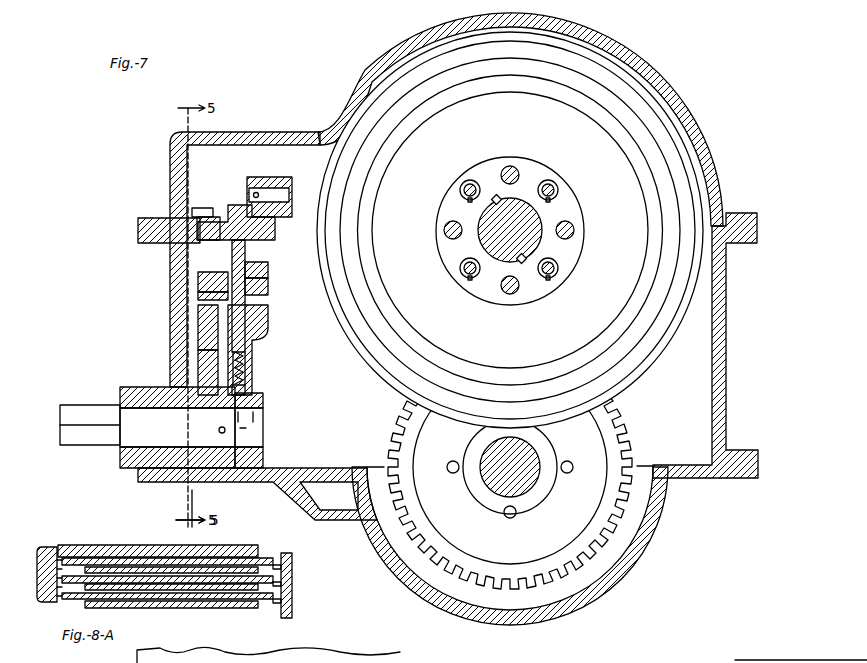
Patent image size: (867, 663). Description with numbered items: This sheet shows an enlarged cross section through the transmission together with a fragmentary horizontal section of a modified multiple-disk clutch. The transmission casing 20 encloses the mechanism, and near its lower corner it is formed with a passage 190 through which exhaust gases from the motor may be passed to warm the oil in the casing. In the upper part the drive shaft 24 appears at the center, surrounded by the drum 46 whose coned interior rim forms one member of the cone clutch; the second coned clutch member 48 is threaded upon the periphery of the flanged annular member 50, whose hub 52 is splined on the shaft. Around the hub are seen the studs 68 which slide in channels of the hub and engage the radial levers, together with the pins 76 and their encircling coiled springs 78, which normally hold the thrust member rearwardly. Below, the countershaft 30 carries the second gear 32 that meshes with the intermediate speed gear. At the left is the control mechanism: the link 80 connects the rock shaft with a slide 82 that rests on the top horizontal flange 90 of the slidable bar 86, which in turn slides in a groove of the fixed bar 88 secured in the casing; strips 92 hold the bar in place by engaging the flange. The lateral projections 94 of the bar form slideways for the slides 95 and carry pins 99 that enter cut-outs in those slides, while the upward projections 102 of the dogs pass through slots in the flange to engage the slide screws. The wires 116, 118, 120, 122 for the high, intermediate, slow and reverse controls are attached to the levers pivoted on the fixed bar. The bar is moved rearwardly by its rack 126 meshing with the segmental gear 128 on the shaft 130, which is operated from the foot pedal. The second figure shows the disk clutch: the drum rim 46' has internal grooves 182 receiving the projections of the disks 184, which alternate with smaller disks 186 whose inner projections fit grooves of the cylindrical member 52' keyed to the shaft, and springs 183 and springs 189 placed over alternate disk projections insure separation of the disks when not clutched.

In FIG. 7, the transmission casing 20 is at (448, 319).
In FIG. 7, the drive shaft 24 is at (530, 238).
In FIG. 8A, the drive shaft 24 is at (553, 643).
In FIG. 7, the countershaft 30 is at (524, 484).
In FIG. 7, the second gear 32 is at (397, 566).
In FIG. 7, the drum 46 is at (510, 230).
In FIG. 7, the second coned clutch member 48 is at (638, 118).
In FIG. 7, the flanged annular member 50 is at (618, 158).
In FIG. 7, the hub 52 is at (510, 224).
In FIG. 7, the studs 68 is at (512, 168).
In FIG. 7, the pins 76 is at (468, 180).
In FIG. 7, the coiled springs 78 is at (468, 200).
In FIG. 7, the link 80 is at (286, 178).
In FIG. 7, the slide 82 is at (242, 205).
In FIG. 7, the slidable bar 86 is at (258, 270).
In FIG. 7, the fixed bar 88 is at (266, 334).
In FIG. 7, the top horizontal flange 90 is at (214, 218).
In FIG. 7, the strips 92 is at (200, 230).
In FIG. 8A, the strips 92 is at (258, 660).
In FIG. 7, the lateral projections 94 is at (198, 275).
In FIG. 7, the slides 95 is at (260, 287).
In FIG. 7, the pins 99 is at (198, 294).
In FIG. 7, the upward projections 102 is at (240, 256).
In FIG. 7, the wire 116 is at (250, 354).
In FIG. 7, the wire 118 is at (252, 362).
In FIG. 7, the wire 120 is at (252, 372).
In FIG. 7, the wire 122 is at (252, 388).
In FIG. 7, the rack 126 is at (198, 314).
In FIG. 7, the segmental gear 128 is at (208, 336).
In FIG. 7, the shaft 130 is at (128, 422).
In FIG. 7, the passage 190 is at (332, 496).
In FIG. 8A, the cylindrical rim 46' is at (48, 552).
In FIG. 8A, the grooves 182 is at (70, 546).
In FIG. 8A, the springs 183 is at (56, 605).
In FIG. 8A, the disks 184 is at (114, 593).
In FIG. 8A, the smaller disks 186 is at (236, 584).
In FIG. 8A, the springs 189 is at (292, 600).
In FIG. 8A, the cylindrical member 52' is at (310, 585).